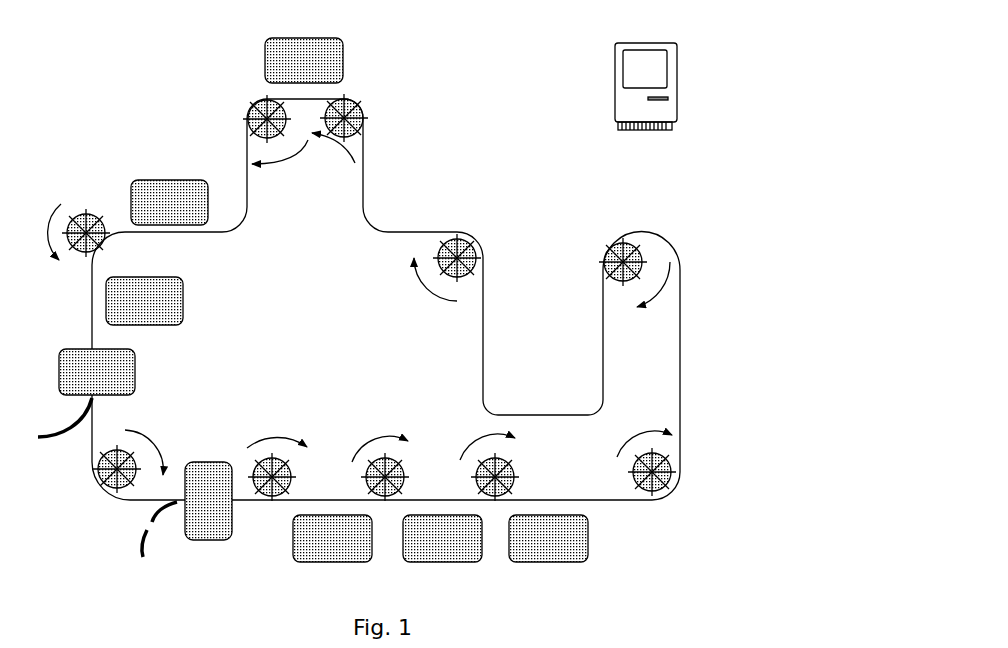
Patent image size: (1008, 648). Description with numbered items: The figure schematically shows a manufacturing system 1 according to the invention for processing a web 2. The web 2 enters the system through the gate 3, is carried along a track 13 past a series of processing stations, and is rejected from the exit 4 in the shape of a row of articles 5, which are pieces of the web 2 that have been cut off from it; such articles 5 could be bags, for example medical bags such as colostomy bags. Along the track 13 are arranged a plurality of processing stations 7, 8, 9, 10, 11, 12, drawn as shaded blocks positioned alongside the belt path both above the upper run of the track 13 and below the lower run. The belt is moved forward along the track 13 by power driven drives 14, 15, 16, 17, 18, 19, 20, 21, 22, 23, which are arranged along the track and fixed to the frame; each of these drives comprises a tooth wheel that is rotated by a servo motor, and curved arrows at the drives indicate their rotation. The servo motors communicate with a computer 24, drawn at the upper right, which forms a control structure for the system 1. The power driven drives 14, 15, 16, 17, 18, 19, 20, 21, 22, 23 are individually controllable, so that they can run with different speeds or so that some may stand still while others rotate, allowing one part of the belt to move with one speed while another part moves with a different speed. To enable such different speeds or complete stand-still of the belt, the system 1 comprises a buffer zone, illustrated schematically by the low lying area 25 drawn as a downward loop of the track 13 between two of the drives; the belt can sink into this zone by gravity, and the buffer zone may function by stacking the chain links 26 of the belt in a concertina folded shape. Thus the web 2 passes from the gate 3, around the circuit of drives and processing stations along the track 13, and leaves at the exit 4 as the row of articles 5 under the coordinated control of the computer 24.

The manufacturing system 1 is at (508, 147).
The web 2 is at (55, 426).
The gate 3 is at (97, 372).
The exit 4 is at (208, 501).
The articles 5 is at (159, 542).
The processing station 7 is at (144, 301).
The processing station 8 is at (169, 202).
The processing station 9 is at (304, 60).
The processing station 10 is at (548, 538).
The processing station 11 is at (442, 538).
The processing station 12 is at (332, 538).
The track 13 is at (682, 373).
The power driven drive 14 is at (79, 221).
The power driven drive 15 is at (262, 126).
The power driven drive 16 is at (355, 125).
The power driven drive 17 is at (460, 257).
The power driven drive 18 is at (633, 258).
The power driven drive 19 is at (652, 472).
The power driven drive 20 is at (504, 467).
The power driven drive 21 is at (394, 468).
The power driven drive 22 is at (284, 469).
The power driven drive 23 is at (120, 473).
The computer 24 is at (662, 43).
The low lying area 25 is at (554, 366).
The chain links 26 is at (541, 647).